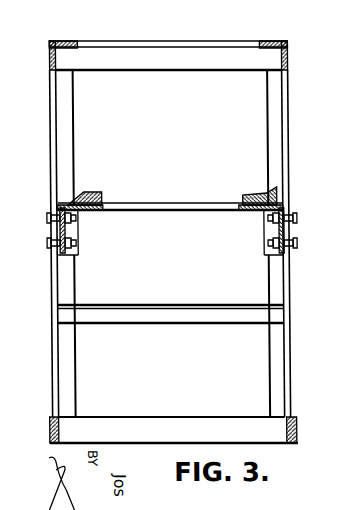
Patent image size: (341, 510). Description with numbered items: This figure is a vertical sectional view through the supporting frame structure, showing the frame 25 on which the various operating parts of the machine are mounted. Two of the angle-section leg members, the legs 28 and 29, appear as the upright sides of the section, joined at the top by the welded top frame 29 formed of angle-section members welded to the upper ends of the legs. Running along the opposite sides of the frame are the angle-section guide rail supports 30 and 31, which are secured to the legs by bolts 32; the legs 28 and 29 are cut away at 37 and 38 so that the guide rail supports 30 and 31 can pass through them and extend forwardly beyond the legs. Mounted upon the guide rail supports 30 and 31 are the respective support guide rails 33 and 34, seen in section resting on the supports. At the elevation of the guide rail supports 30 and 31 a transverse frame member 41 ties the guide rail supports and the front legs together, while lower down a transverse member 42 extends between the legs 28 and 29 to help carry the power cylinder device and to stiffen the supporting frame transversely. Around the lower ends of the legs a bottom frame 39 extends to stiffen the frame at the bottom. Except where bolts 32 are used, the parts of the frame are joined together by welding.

The frame 25 is at (294, 150).
The leg member 28 is at (49, 126).
The leg member 29 is at (161, 41).
The guide rail support 30 is at (97, 211).
The guide rail support 31 is at (249, 211).
The bolts 32 is at (44, 218).
The support guide rail 33 is at (84, 191).
The support guide rail 34 is at (258, 194).
The cut away 37 is at (77, 253).
The cut away 38 is at (264, 252).
The bottom frame 39 is at (183, 416).
The transverse frame member 41 is at (183, 203).
The transverse member 42 is at (174, 324).